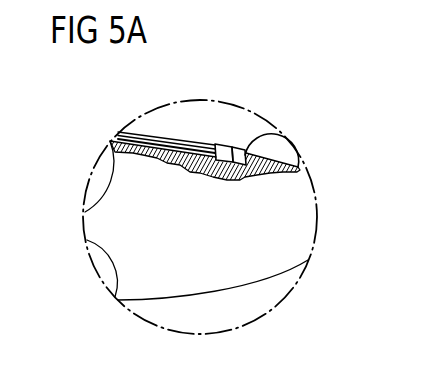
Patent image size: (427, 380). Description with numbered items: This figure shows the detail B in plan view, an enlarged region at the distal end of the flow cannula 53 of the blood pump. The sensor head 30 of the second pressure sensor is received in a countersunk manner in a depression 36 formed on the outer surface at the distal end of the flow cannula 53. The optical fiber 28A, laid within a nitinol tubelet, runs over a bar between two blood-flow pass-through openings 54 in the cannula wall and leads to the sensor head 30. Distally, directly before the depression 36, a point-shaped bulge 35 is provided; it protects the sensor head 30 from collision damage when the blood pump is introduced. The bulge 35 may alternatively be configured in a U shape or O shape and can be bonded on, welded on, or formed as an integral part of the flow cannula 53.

The optical fiber 28A is at (147, 133).
The flow cannula 53 is at (196, 113).
The sensor head 30 is at (222, 150).
The depression 36 is at (238, 166).
The point-shaped bulge 35 is at (270, 142).
The blood-flow pass-through openings 54 is at (102, 266).
The detail B is at (315, 200).